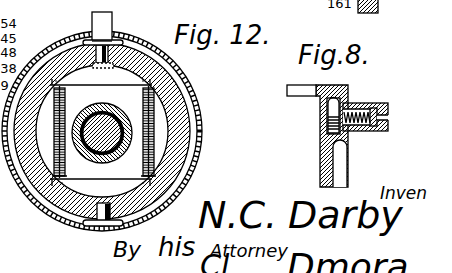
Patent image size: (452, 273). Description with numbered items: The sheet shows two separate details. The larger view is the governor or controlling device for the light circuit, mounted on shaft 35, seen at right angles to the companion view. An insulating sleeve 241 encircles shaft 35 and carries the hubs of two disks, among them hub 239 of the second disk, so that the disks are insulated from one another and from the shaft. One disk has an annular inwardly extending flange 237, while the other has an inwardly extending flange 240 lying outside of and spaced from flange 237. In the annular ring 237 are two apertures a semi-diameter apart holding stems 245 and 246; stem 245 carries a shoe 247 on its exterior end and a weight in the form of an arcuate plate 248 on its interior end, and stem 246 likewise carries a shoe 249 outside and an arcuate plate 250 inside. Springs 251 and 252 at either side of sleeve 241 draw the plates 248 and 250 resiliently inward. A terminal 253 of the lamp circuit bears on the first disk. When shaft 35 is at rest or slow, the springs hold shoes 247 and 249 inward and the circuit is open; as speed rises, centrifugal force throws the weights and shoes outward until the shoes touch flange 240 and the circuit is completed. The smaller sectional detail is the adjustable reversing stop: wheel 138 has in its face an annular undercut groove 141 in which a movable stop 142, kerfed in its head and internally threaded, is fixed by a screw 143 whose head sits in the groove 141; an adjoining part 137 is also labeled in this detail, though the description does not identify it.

In FIG. 12, the annular inwardly extending flange 237 is at (180, 91).
In FIG. 12, the inwardly extending flange 240 is at (202, 156).
In FIG. 12, the arcuate plate 248 is at (160, 59).
In FIG. 12, the arcuate plate 250 is at (62, 189).
In FIG. 12, the terminal 253 is at (108, 14).
In FIG. 12, the stem 245 is at (86, 42).
In FIG. 12, the shoe 247 is at (118, 38).
In FIG. 12, the spring 251 is at (58, 129).
In FIG. 12, the spring 252 is at (150, 134).
In FIG. 12, the sleeve of insulating material 241 is at (89, 113).
In FIG. 12, the hub 239 is at (118, 112).
In FIG. 12, the shaft 35 is at (105, 150).
In FIG. 12, the stem 246 is at (102, 215).
In FIG. 12, the shoe 249 is at (96, 224).
In FIG. 8, the bracket arm 137 is at (293, 89).
In FIG. 8, the wheel 138 is at (320, 152).
In FIG. 8, the annular undercut groove 141 is at (345, 91).
In FIG. 8, the movable stop 142 is at (388, 108).
In FIG. 8, the screw 143 is at (360, 108).